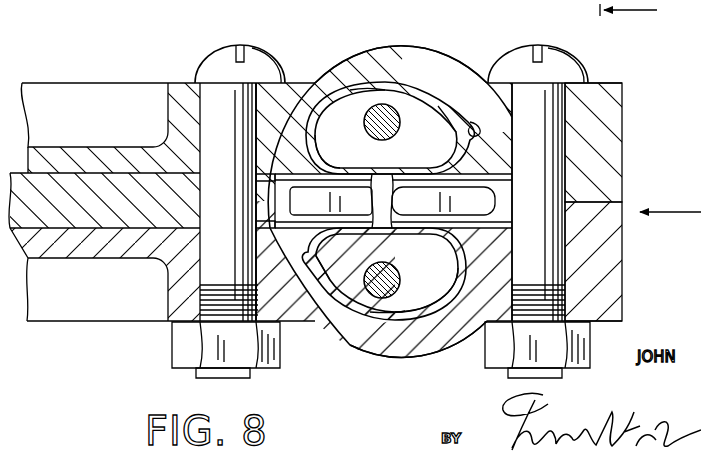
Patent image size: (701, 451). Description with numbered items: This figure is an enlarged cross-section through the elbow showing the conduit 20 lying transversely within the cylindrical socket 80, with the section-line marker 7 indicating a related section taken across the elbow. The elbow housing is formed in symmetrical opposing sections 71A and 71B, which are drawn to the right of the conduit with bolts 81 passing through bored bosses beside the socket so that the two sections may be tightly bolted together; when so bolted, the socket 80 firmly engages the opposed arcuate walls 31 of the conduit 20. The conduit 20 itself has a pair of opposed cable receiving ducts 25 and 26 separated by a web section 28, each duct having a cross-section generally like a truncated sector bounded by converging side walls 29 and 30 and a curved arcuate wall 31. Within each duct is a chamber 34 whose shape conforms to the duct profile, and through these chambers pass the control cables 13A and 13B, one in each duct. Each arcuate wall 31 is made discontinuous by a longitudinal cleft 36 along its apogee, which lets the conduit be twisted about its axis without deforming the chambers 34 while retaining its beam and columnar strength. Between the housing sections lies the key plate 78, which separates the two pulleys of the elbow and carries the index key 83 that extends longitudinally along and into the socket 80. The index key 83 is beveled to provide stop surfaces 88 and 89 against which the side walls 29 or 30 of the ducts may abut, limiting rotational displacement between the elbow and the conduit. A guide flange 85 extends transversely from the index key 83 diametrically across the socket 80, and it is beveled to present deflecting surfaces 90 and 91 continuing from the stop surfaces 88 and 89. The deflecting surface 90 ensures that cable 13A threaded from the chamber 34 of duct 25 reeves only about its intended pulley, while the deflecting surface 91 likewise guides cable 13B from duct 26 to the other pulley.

The section line indicator 7 is at (617, 11).
The control cable 13A is at (374, 106).
The control cable strand 13B is at (388, 298).
The conduit 20 is at (449, 318).
The cable receiving duct 25 is at (437, 76).
The cable receiving duct 26 is at (335, 316).
The web section 28 is at (387, 226).
The side wall 29 is at (323, 148).
The side wall 30 is at (447, 132).
The arcuate wall 31 is at (354, 88).
The chamber 34 is at (386, 201).
The longitudinal cleft 36 is at (396, 84).
The housing section 71A is at (606, 170).
The housing section 71B is at (606, 268).
The key plate 78 is at (105, 182).
The socket 80 is at (478, 134).
The bolt 81 is at (208, 108).
The index key 83 is at (286, 184).
The guide flange 85 is at (476, 205).
The stop surface 88 is at (274, 177).
The stop surface 89 is at (277, 230).
The deflecting surface 90 is at (472, 176).
The deflecting surface 91 is at (470, 229).